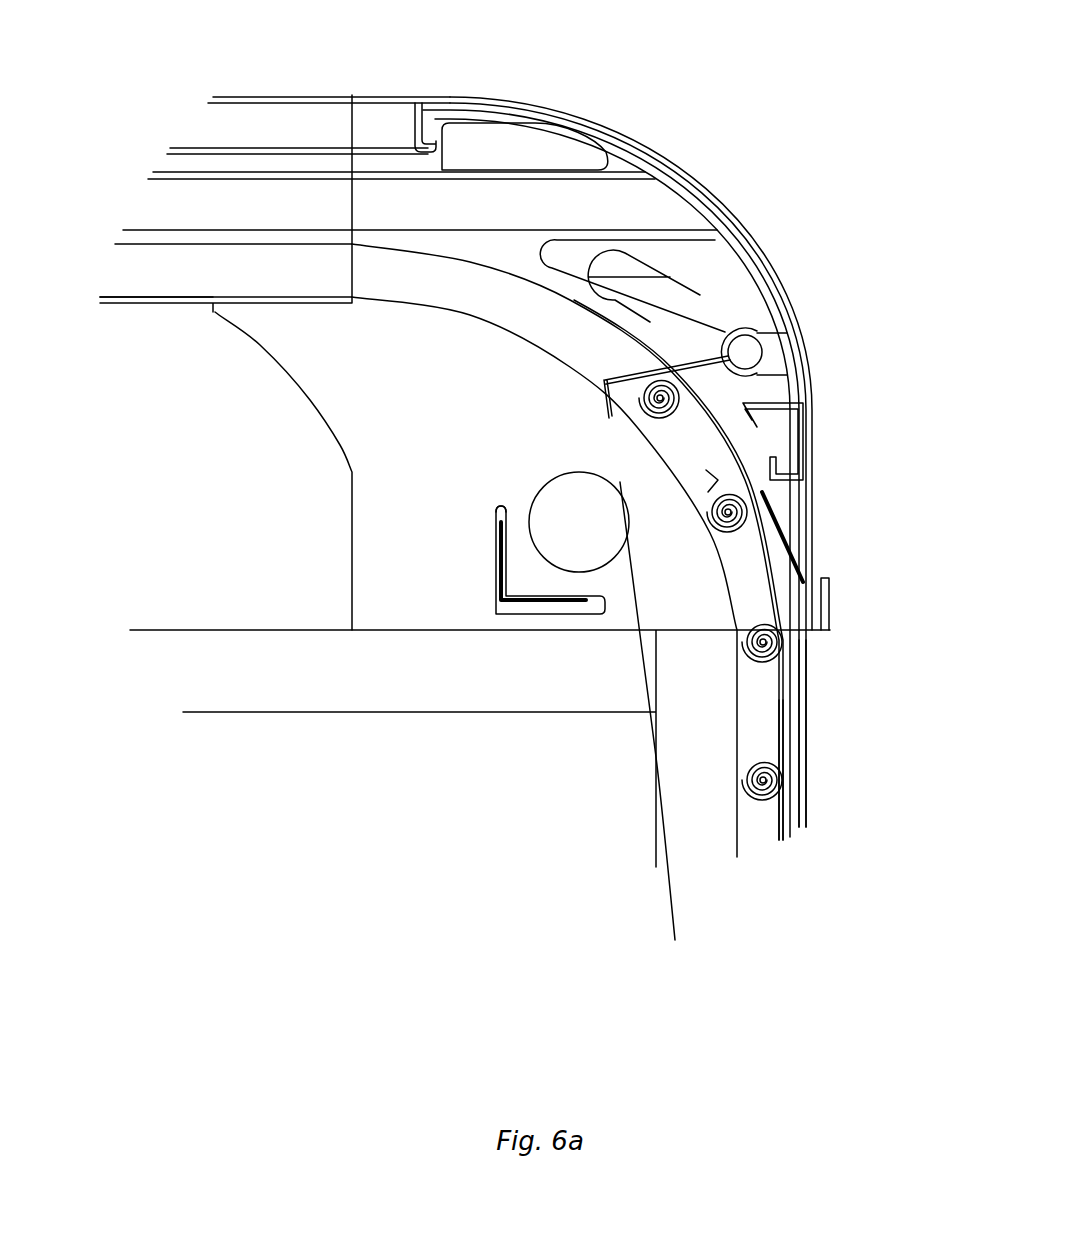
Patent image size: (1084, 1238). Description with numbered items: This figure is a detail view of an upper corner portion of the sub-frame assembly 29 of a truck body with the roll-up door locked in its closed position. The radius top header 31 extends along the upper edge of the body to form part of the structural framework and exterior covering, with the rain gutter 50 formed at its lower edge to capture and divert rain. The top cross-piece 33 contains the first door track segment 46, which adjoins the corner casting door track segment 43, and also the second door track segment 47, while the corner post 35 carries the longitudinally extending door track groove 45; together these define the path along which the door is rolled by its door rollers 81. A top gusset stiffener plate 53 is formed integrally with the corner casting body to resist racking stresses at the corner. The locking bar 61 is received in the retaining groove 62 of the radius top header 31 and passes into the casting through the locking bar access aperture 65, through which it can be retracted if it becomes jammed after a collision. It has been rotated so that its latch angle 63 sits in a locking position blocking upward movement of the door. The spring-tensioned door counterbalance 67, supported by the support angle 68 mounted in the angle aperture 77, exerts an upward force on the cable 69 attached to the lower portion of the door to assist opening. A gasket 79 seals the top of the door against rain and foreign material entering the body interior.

The sub-frame assembly 29 is at (612, 92).
The radius top header 31 is at (698, 180).
The top cross-piece 33 is at (277, 96).
The corner post 35 is at (806, 727).
The door track segment 43 is at (540, 318).
The door track groove 45 is at (762, 742).
The first door track segment 46 is at (232, 282).
The second door track segment 47 is at (193, 272).
The rain gutter 50 is at (828, 602).
The top gusset stiffener plate 53 is at (373, 360).
The locking bar 61 is at (772, 352).
The retaining groove 62 is at (800, 397).
The latch angle 63 is at (630, 352).
The locking bar access aperture 65 is at (718, 318).
The door counterbalance 67 is at (584, 472).
The support angle 68 is at (500, 560).
The cable 69 is at (640, 618).
The angle aperture 77 is at (500, 506).
The gasket 79 is at (748, 455).
The door rollers 81 is at (712, 478).